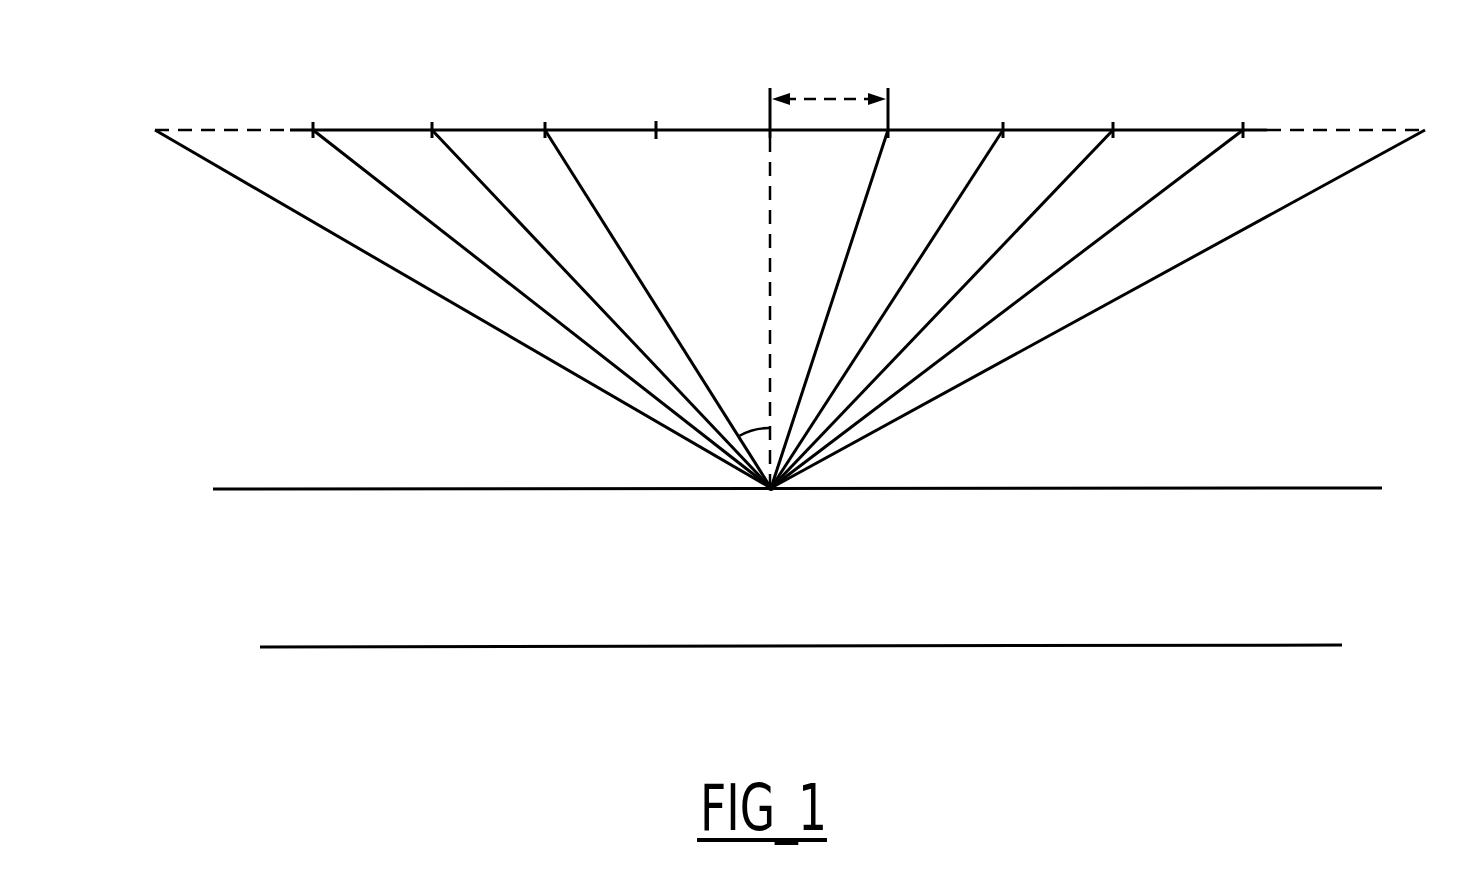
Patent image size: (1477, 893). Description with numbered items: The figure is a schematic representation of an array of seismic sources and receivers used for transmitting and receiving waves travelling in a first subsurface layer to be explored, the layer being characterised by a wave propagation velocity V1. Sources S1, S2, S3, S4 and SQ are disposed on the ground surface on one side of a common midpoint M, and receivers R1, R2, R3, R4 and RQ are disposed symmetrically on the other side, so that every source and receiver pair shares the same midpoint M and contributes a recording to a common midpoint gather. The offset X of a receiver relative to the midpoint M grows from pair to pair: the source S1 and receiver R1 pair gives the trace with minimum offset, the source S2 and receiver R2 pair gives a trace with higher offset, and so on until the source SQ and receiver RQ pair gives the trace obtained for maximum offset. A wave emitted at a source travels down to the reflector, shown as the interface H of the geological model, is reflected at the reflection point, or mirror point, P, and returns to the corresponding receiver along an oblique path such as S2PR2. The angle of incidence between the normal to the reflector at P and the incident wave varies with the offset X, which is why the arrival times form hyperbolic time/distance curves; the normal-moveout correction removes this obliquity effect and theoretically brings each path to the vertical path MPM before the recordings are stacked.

The source SQ is at (452, 282).
The source S4 is at (534, 275).
The source S3 is at (592, 275).
The source S2 is at (650, 276).
The source S1 is at (660, 101).
The midpoint M is at (767, 253).
The offset X is at (830, 90).
The receiver R1 is at (850, 271).
The receiver R2 is at (901, 272).
The receiver R3 is at (956, 272).
The receiver R4 is at (1018, 272).
The receiver RQ is at (1121, 273).
The interface H is at (320, 490).
The reflection point P is at (773, 490).
The wave propagation velocity V1 is at (811, 466).